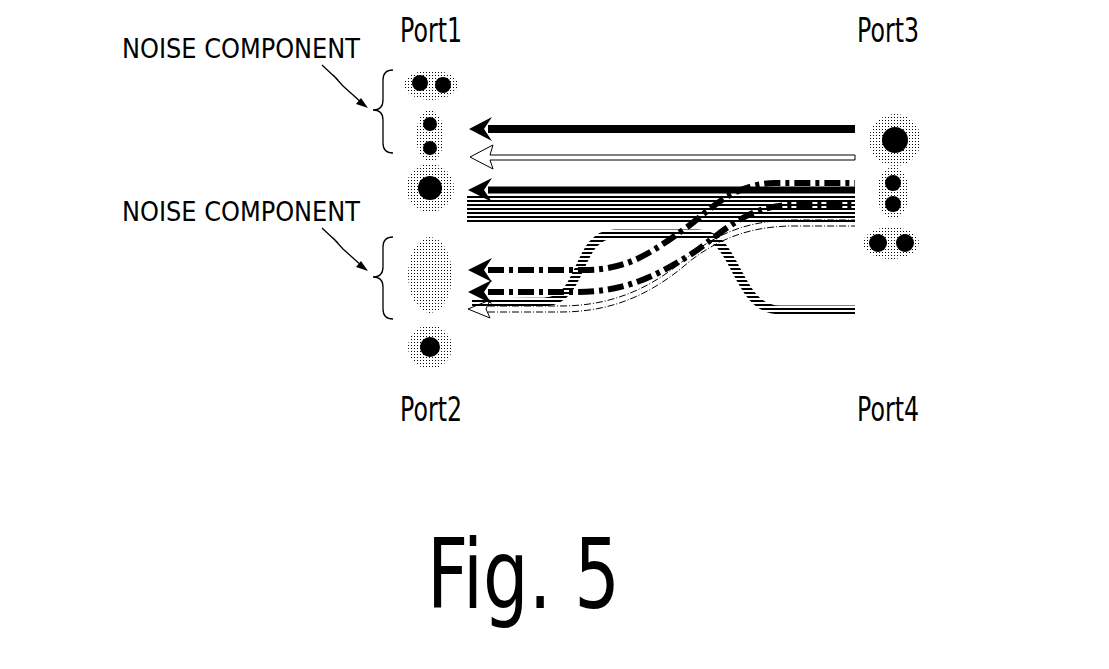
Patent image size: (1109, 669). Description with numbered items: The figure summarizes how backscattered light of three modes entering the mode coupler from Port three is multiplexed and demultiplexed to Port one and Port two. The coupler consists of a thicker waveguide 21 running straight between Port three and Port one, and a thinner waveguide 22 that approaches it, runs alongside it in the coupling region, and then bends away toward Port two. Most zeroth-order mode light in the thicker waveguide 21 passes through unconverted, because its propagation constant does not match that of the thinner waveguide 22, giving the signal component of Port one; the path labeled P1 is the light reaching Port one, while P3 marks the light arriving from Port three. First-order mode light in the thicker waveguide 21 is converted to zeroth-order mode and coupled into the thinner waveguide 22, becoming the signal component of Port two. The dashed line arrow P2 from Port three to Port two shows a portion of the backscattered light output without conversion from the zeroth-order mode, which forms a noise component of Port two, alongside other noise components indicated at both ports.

The thicker waveguide 21 is at (526, 222).
The thinner waveguide 22 is at (788, 316).
The light P1 from Port3 to Port1 P1 is at (623, 190).
The dashed line arrow P2 is at (606, 310).
The light P3 is at (797, 183).